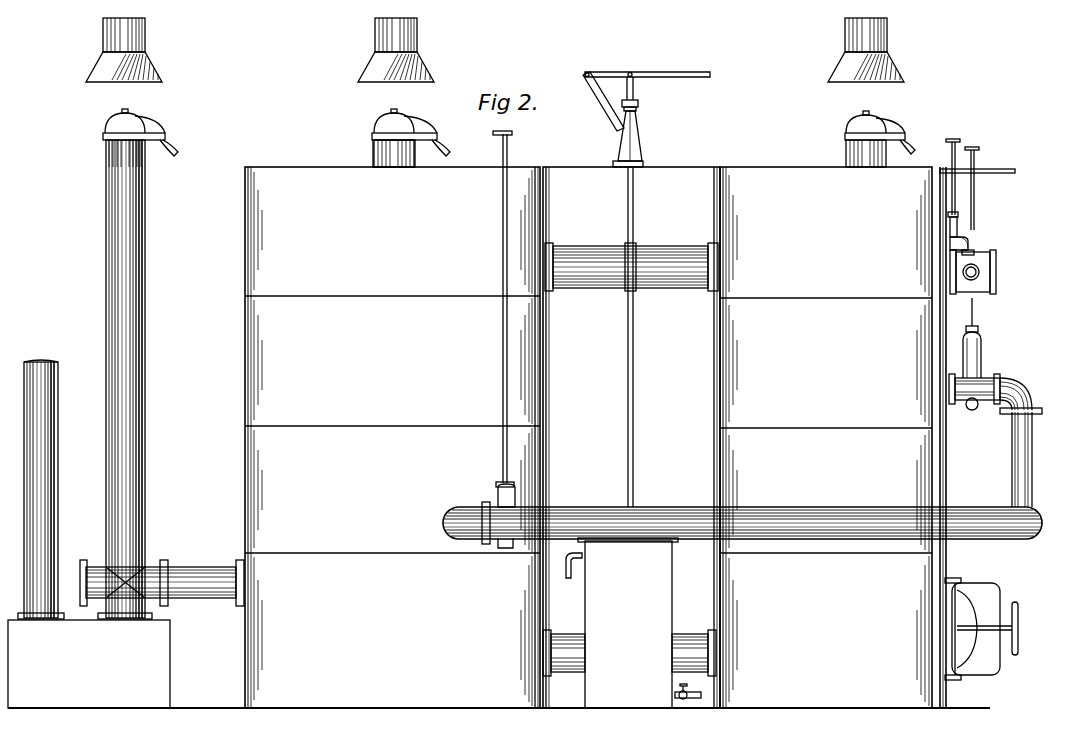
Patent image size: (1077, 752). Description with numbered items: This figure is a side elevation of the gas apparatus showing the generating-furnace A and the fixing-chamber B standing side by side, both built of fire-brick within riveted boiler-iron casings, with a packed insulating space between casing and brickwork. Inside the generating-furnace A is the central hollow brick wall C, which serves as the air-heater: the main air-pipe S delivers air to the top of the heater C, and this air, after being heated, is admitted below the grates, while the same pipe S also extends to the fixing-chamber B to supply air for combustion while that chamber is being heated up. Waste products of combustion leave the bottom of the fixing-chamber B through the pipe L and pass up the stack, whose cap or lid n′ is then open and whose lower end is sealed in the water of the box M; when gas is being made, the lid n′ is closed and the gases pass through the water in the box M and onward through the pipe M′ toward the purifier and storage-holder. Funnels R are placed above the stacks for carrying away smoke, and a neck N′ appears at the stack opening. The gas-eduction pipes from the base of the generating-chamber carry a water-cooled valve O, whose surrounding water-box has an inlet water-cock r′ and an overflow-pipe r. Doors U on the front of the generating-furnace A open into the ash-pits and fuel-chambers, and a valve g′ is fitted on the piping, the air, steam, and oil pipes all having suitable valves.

The funnel R is at (498, 50).
The cap or lid of stack n′ is at (500, 137).
The opening neck N′ is at (380, 153).
The hollow brick wall (air-heater) C is at (146, 352).
The pipe M′ is at (53, 489).
The box M is at (89, 664).
The pipe L is at (162, 572).
The fixing-chamber B is at (392, 437).
The generating-furnace A is at (826, 437).
The water-cooled valve O is at (628, 623).
The overflow-pipe r is at (574, 568).
The inlet water-cock r′ is at (688, 686).
The air-pipe (main pipe) S is at (797, 507).
The valve g′ is at (977, 216).
The door U is at (981, 629).